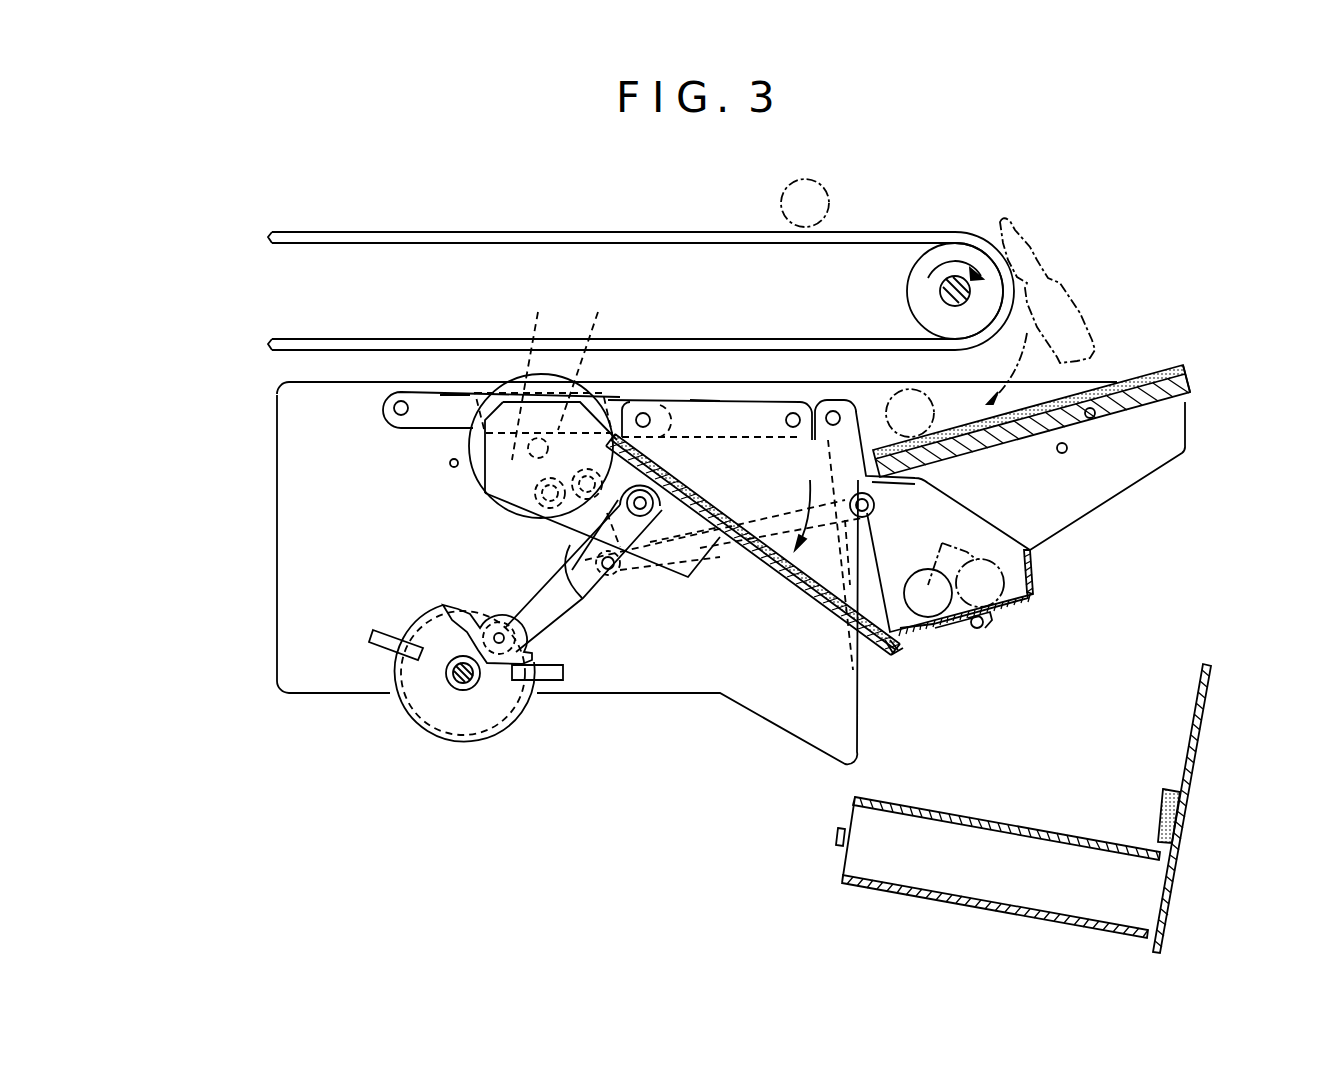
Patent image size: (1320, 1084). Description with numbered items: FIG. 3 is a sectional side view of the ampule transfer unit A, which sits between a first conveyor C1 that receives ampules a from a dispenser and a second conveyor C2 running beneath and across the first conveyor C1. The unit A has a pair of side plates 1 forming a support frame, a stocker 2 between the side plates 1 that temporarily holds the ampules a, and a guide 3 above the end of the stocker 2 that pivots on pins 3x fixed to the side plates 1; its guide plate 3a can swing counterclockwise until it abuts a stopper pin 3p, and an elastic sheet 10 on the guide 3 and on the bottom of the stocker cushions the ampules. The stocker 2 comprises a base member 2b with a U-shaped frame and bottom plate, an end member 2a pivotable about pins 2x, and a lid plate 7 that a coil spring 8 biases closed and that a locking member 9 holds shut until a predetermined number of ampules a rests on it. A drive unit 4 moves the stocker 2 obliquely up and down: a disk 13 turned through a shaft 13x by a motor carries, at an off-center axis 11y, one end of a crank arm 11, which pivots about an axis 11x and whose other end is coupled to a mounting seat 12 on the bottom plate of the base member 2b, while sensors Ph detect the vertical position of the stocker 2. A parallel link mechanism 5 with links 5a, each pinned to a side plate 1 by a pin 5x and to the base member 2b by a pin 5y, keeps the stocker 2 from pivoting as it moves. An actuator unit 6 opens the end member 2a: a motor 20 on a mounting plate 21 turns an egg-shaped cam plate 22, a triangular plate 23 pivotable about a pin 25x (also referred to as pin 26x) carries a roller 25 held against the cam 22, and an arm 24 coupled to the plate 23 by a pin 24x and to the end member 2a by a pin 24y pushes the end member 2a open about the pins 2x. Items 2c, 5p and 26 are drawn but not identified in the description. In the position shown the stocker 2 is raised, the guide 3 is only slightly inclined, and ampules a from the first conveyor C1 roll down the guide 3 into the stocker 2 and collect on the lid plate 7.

The side plates 1 is at (288, 476).
The stocker 2 is at (1040, 596).
The end member 2a is at (1037, 556).
The base member 2b is at (842, 625).
The bracket bottom edge 2c is at (972, 634).
The pins 2x is at (832, 410).
The guide 3 is at (1192, 373).
The guide plate 3a is at (1190, 382).
The pins 3x is at (1095, 418).
The stopper pin 3p is at (1067, 452).
The drive unit 4 is at (395, 706).
The link mechanism 5 is at (437, 386).
The links 5a is at (462, 398).
The pin 5x is at (399, 402).
The pin 5y is at (648, 413).
The plate hole 5p is at (450, 462).
The actuator unit 6 is at (466, 480).
The lid plate 7 is at (920, 634).
The coil spring 8 is at (985, 624).
The locking member 9 is at (890, 650).
The elastic sheet 10 is at (1123, 374).
The crank arm 11 is at (530, 607).
The axis 11x is at (640, 503).
The axis 11y is at (505, 642).
The mounting seat 12 is at (662, 512).
The disk 13 is at (465, 612).
The shaft 13x is at (463, 692).
The motor 20 is at (470, 497).
The mounting plate 21 is at (505, 492).
The cam plate 22 is at (533, 372).
The triangular plate 23 is at (585, 593).
The arm 24 is at (760, 545).
The pin 24x is at (617, 567).
The pin 24y is at (875, 492).
The roller 25 is at (538, 500).
The pin 25x is at (582, 498).
The plate 26 is at (630, 453).
The pin 26x is at (590, 357).
The ampule transfer unit A is at (1178, 347).
The ampules a is at (818, 196).
The first conveyor C1 is at (410, 228).
The second conveyor C2 is at (934, 898).
The sensors Ph is at (385, 638).